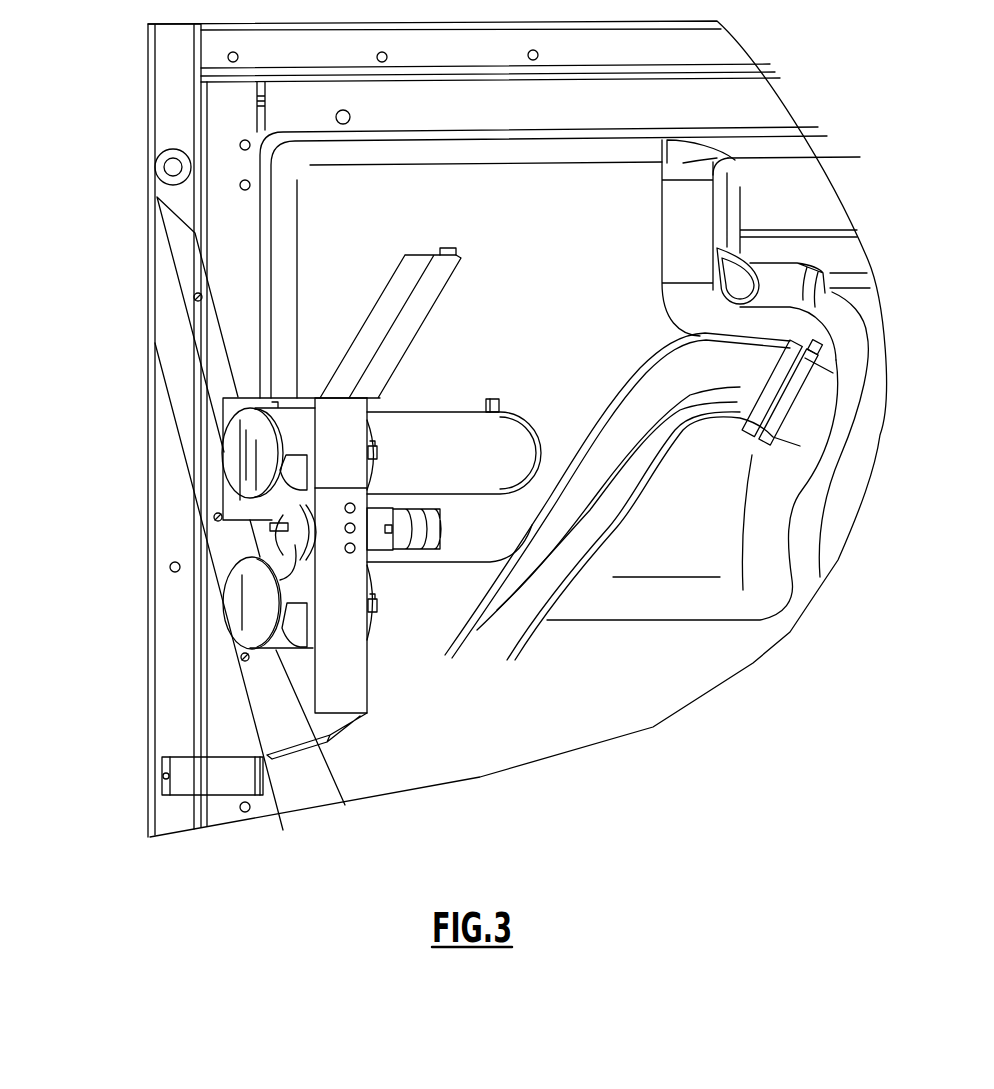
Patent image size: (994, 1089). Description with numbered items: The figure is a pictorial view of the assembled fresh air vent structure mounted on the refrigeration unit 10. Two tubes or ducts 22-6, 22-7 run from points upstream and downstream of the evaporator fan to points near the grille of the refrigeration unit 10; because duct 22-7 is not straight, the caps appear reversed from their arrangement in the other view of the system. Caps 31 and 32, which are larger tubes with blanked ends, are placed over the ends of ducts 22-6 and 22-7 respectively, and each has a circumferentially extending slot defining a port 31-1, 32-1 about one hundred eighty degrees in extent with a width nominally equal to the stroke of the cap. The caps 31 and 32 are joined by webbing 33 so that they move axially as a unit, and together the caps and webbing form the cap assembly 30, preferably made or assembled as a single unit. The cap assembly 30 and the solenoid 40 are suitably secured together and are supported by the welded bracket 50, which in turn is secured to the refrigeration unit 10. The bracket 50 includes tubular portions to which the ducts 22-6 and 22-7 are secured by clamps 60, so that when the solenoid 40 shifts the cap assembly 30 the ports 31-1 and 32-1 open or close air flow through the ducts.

The refrigeration unit 10 is at (112, 66).
The cap assembly 30 is at (118, 506).
The cap 31 is at (243, 444).
The slot 31-1 is at (292, 468).
The cap 32 is at (250, 636).
The slot 32-1 is at (293, 622).
The webbing 33 is at (277, 584).
The solenoid 40 is at (440, 528).
The welded bracket 50 is at (267, 704).
The clamp 60 is at (380, 453).
The duct 22-6 is at (465, 410).
The duct 22-7 is at (527, 637).